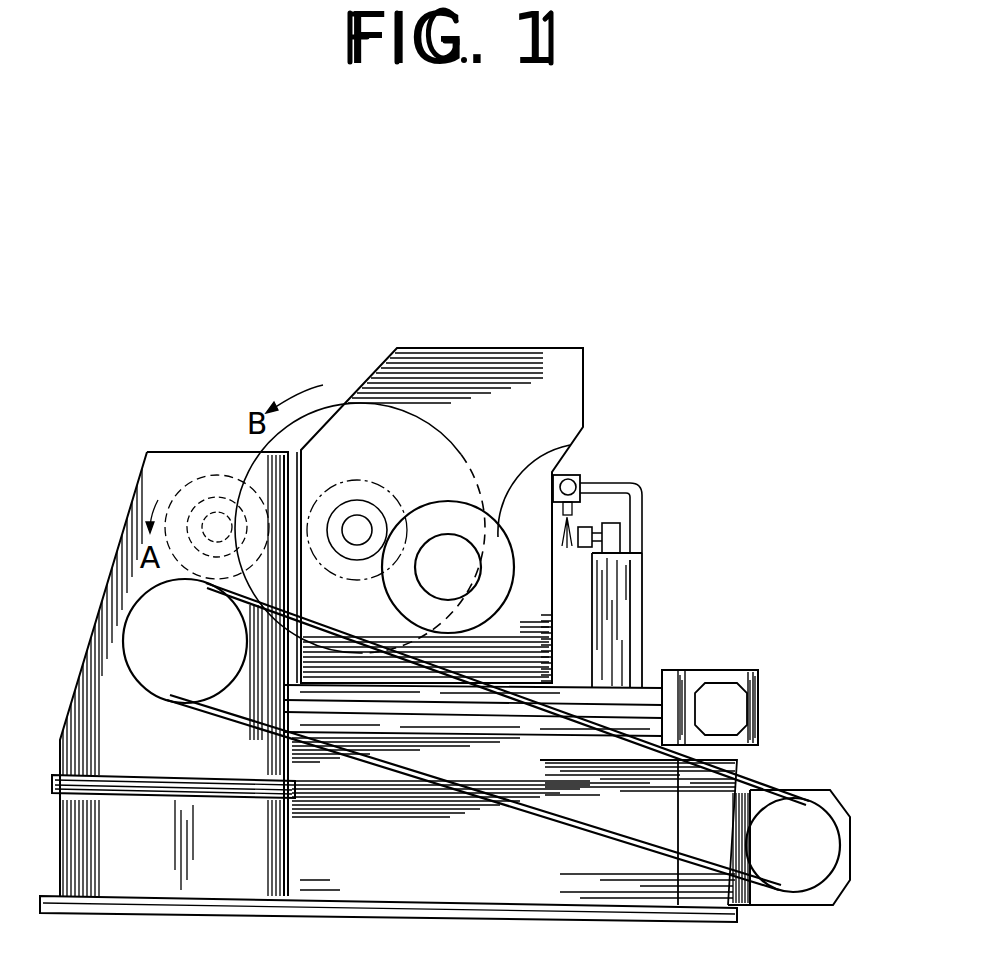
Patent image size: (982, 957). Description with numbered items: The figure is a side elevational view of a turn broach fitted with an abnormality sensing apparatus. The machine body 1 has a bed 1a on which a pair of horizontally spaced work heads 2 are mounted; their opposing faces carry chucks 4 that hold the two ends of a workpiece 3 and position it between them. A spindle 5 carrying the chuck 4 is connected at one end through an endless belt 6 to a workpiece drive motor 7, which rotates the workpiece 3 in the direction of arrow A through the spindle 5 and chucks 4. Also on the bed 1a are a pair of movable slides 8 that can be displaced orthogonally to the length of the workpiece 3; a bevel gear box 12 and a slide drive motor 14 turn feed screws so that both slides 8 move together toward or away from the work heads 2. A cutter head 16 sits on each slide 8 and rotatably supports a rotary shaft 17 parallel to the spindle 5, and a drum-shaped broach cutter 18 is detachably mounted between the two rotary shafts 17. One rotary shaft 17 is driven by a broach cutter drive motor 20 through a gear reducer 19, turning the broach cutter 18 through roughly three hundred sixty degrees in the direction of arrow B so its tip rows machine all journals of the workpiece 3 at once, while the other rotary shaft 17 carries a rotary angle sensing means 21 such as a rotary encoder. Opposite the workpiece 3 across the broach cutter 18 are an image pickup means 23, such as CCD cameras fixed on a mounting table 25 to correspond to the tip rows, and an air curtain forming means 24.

The machine body 1 is at (70, 695).
The bed 1a is at (375, 865).
The work head 2 is at (100, 647).
The workpiece 3 is at (221, 482).
The chuck 4 is at (205, 495).
The spindle 5 is at (190, 498).
The endless belt 6 is at (588, 833).
The workpiece drive motor 7 is at (830, 790).
The movable slide 8 is at (615, 697).
The bevel gear box 12 is at (737, 675).
The slide drive motor 14 is at (732, 703).
The cutter head 16 is at (565, 378).
The rotary shaft 17 is at (353, 497).
The broach cutter 18 is at (332, 408).
The gear reducer 19 is at (557, 453).
The broach cutter drive motor 20 is at (460, 577).
The rotary angle sensing means 21 is at (377, 510).
The image pickup means 23 is at (617, 537).
The air curtain forming means 24 is at (588, 472).
The mounting table 25 is at (612, 610).